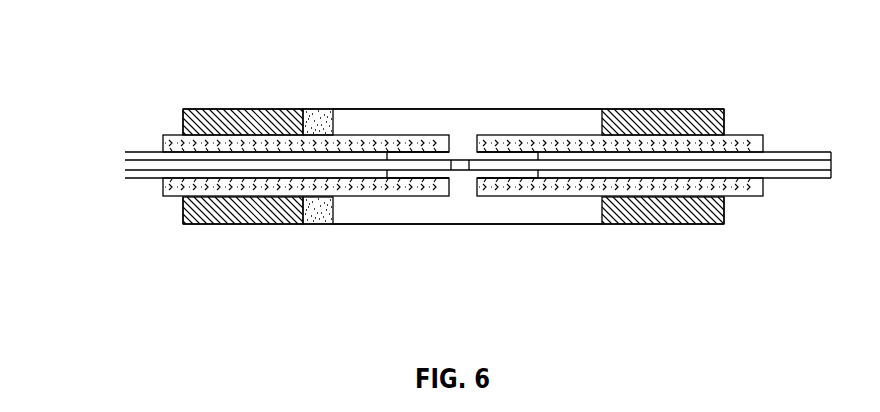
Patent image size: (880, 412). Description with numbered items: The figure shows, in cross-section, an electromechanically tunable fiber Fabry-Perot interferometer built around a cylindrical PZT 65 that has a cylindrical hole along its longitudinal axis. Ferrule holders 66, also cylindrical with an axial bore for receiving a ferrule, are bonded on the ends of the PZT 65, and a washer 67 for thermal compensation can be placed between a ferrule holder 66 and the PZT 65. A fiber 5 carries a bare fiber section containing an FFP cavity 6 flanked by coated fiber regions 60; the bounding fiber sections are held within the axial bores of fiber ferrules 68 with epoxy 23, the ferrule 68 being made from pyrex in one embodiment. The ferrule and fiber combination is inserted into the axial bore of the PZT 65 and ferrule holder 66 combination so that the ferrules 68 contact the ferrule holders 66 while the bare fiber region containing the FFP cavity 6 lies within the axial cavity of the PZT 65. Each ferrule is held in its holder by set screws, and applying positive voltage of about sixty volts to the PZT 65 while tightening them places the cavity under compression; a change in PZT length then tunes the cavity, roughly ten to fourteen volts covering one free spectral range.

The fiber 5 is at (815, 168).
The FFP cavity 6 is at (462, 160).
The epoxy 23 is at (523, 157).
The coated fiber regions 60 is at (190, 148).
The cylindrical PZT 65 is at (452, 120).
The ferrule holder 66 is at (675, 115).
The washer 67 is at (317, 217).
The fiber ferrule 68 is at (398, 188).